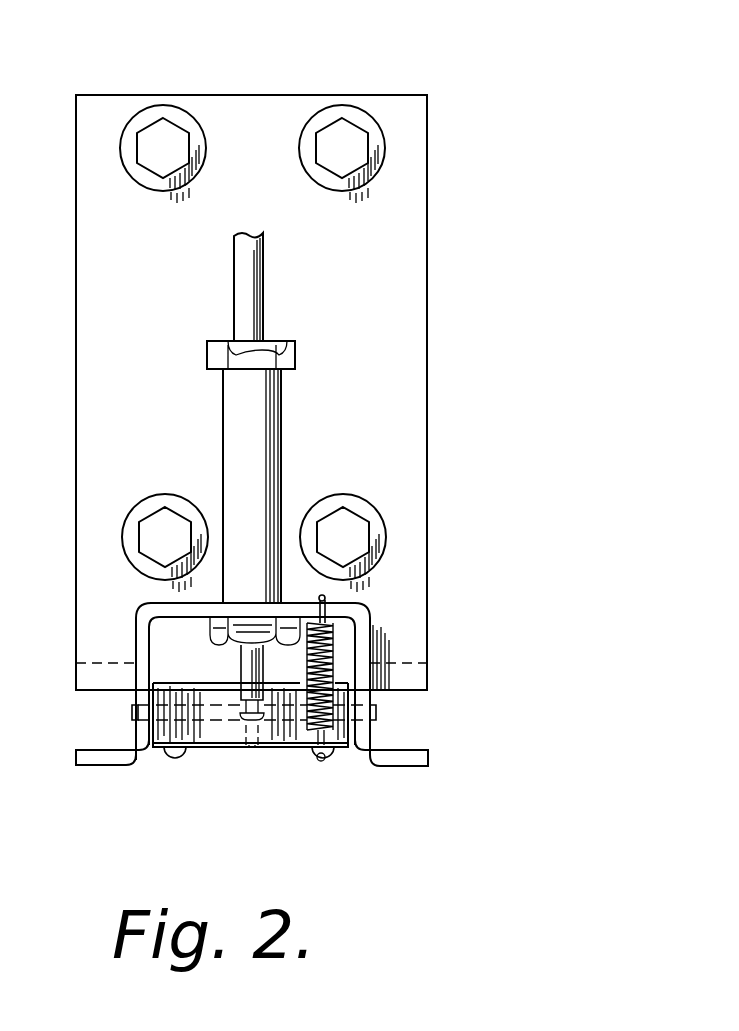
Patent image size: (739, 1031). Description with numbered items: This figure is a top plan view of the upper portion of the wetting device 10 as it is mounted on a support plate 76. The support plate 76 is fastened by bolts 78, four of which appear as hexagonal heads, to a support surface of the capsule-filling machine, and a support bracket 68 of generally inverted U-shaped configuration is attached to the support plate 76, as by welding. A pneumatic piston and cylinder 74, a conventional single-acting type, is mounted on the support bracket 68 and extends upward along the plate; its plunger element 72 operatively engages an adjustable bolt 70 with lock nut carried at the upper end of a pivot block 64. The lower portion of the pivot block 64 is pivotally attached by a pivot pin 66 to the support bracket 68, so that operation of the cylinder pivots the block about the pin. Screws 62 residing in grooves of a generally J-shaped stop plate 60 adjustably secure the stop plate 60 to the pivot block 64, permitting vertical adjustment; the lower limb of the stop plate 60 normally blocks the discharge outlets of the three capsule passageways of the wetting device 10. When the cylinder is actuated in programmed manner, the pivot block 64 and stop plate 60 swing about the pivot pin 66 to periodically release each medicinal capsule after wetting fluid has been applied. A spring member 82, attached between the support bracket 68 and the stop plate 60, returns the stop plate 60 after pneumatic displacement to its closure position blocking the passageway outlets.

The wetting device 10 is at (262, 758).
The J-shaped stop plate 60 is at (212, 748).
The screws 62 is at (168, 752).
The pivot block 64 is at (228, 738).
The pivot pin 66 is at (131, 712).
The support bracket 68 is at (362, 613).
The adjustable bolt 70 is at (242, 712).
The plunger element 72 is at (241, 663).
The pneumatic piston and cylinder 74 is at (276, 443).
The support plate 76 is at (407, 357).
The bolts 78 is at (345, 140).
The spring member 82 is at (332, 668).